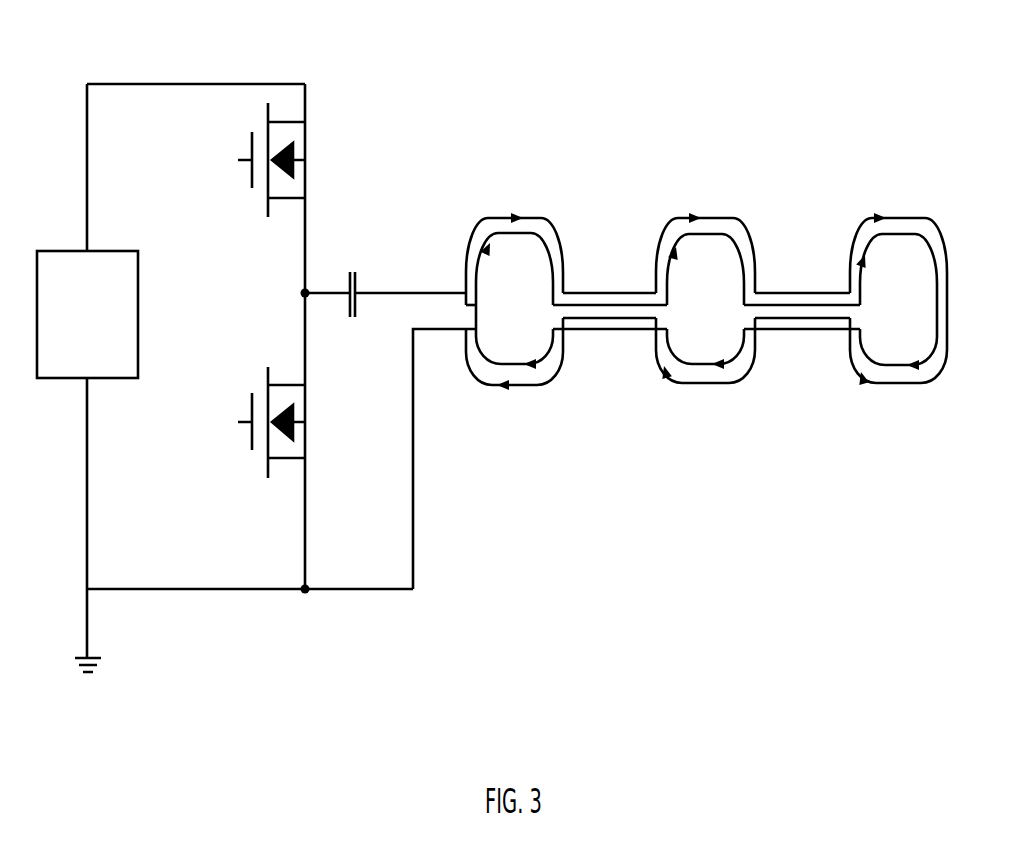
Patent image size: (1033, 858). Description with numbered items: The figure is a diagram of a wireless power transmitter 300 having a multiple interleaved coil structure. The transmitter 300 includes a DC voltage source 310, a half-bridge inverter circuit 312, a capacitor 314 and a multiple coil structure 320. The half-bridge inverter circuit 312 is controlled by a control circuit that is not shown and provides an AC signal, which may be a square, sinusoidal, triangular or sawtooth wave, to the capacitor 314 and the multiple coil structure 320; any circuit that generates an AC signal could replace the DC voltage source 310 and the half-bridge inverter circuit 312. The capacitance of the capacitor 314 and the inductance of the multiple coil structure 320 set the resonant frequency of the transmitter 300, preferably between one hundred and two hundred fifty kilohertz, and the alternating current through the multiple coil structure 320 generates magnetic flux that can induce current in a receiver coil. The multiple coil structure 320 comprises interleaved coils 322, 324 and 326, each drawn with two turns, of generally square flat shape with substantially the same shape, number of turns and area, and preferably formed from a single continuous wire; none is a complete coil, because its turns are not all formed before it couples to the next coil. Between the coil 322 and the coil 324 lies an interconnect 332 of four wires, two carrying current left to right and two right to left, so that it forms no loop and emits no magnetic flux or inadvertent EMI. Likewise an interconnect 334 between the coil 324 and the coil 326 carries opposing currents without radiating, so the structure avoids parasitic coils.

The wireless power transmitter 300 is at (488, 103).
The DC voltage source 310 is at (60, 251).
The half-bridge inverter circuit 312 is at (235, 250).
The capacitor 314 is at (355, 278).
The multiple coil structure 320 is at (600, 430).
The coil 322 is at (543, 218).
The coil 324 is at (728, 200).
The coil 326 is at (904, 217).
The interconnect 332 is at (607, 272).
The interconnect 334 is at (797, 272).